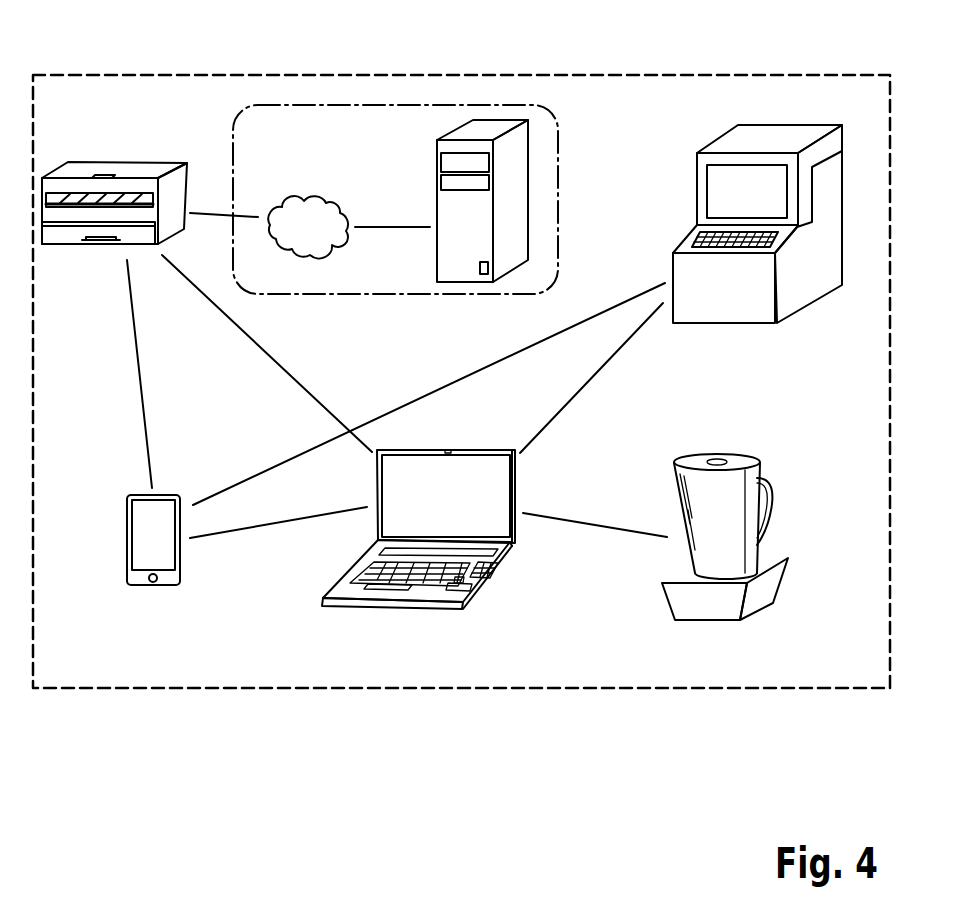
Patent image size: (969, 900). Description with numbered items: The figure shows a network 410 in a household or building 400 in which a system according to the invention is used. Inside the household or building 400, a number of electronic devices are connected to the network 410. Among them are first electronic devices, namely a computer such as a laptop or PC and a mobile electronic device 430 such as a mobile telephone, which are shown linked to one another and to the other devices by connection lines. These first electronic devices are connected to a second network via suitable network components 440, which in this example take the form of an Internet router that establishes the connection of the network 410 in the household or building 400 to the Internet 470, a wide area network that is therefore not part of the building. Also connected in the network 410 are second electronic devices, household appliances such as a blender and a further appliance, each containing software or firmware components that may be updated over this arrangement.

The household or building 400 is at (600, 90).
The network 410 is at (397, 405).
The mobile electronic device 430 is at (141, 590).
The network components 440 is at (145, 175).
The Internet 470 is at (287, 205).